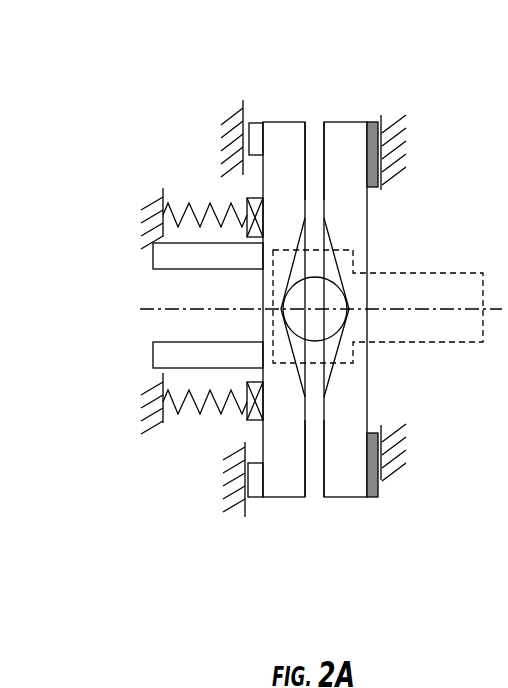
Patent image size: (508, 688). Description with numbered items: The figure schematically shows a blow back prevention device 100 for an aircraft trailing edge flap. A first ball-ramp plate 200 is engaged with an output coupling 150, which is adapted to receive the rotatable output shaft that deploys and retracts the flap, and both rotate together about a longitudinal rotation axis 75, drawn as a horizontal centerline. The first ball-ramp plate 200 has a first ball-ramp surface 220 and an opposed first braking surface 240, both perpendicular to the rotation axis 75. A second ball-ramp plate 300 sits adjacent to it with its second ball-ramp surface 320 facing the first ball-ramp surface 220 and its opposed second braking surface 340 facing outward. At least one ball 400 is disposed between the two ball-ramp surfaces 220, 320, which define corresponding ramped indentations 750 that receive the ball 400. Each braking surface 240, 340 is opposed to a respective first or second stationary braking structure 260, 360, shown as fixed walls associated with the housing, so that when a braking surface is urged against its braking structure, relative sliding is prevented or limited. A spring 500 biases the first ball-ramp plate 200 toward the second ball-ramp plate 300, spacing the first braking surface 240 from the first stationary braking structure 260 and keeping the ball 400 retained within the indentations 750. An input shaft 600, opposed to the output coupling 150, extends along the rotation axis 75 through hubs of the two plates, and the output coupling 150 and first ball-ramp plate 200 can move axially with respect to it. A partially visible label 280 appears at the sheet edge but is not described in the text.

The blow back prevention device 100 is at (172, 131).
The first ball-ramp plate 200 is at (278, 126).
The first braking surface 240 is at (243, 136).
The first stationary braking structure 260 is at (250, 503).
The second ball-ramp plate 300 is at (340, 128).
The second ball-ramp surface 320 is at (318, 134).
The first ball-ramp surface 220 is at (308, 484).
The second stationary braking structure 360 is at (374, 131).
The second braking surface 340 is at (379, 457).
The spring 500 is at (200, 194).
The output coupling 150 is at (166, 257).
The longitudinal rotation axis 75 is at (175, 311).
The input shaft 600 is at (469, 282).
The ball 400 is at (327, 310).
The ramped indentations 750 is at (310, 237).
The plate portion 280 is at (494, 675).